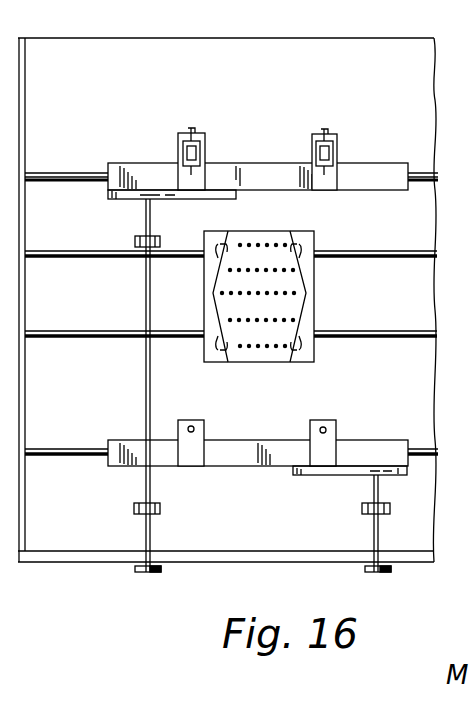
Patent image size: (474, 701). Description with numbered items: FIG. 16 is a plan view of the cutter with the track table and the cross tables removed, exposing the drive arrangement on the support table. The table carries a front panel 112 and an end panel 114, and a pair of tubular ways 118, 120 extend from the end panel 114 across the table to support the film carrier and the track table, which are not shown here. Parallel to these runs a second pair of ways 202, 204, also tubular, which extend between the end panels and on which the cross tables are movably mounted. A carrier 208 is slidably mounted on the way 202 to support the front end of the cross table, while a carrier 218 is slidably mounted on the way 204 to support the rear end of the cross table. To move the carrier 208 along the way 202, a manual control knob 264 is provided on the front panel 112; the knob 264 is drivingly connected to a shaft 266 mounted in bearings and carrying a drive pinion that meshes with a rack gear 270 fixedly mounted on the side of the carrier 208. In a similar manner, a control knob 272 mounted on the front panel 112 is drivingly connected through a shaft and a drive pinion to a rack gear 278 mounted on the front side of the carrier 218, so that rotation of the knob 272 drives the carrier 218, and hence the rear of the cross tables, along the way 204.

The front panel 112 is at (96, 562).
The end panel 114 is at (26, 104).
The tubular way 118 is at (58, 251).
The tubular way 120 is at (58, 331).
The way 202 is at (47, 449).
The way 204 is at (60, 173).
The carrier 208 is at (264, 466).
The carrier 218 is at (233, 163).
The manual control knob 264 is at (377, 572).
The shaft 266 is at (380, 528).
The rack gear 270 is at (342, 475).
The control knob 272 is at (147, 572).
The rack gear 278 is at (218, 198).